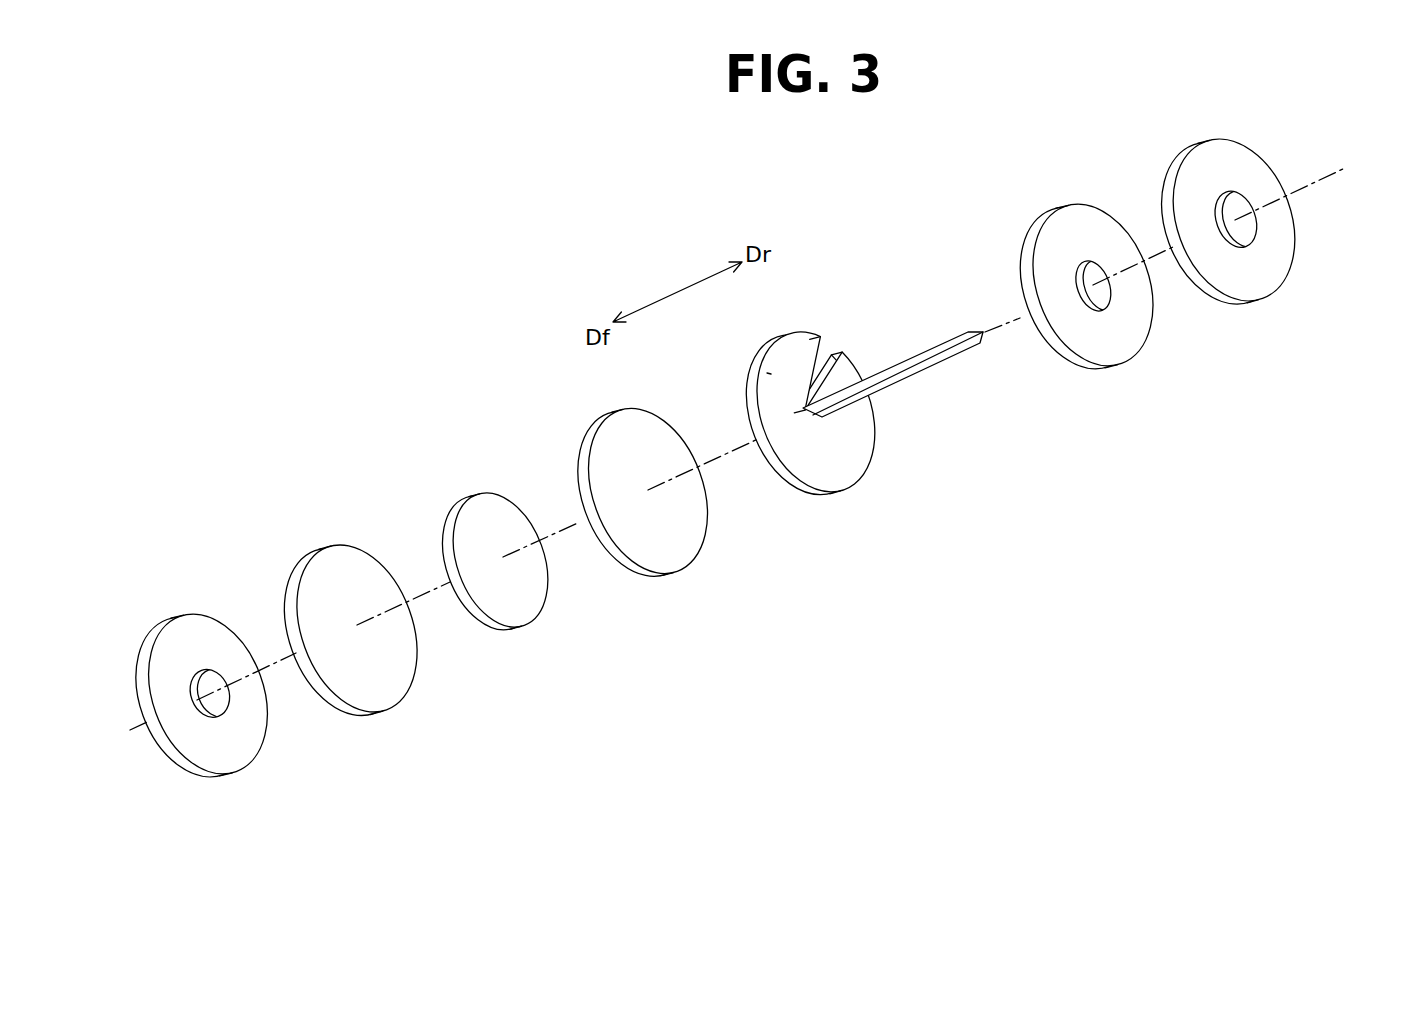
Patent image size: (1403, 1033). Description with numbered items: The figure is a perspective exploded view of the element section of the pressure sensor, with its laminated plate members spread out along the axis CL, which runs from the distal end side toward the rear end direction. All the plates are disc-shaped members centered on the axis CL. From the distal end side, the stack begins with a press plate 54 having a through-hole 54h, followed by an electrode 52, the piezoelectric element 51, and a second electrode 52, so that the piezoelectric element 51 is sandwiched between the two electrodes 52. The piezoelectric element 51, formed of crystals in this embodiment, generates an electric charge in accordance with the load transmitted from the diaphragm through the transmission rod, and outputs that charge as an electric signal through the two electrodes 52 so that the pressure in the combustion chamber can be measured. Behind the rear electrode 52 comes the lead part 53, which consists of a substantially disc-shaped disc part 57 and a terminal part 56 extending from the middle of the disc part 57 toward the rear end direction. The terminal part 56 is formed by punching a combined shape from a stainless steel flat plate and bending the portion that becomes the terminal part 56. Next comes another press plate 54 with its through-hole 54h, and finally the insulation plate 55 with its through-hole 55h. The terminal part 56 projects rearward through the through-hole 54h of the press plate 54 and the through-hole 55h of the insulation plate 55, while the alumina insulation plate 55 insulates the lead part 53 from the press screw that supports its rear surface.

The piezoelectric element 51 is at (530, 612).
The electrode 52 is at (383, 697).
The lead part 53 is at (850, 478).
The press plate 54 is at (235, 768).
The through-hole 54h is at (199, 669).
The insulation plate 55 is at (1263, 289).
The through-hole 55h is at (1227, 192).
The terminal part 56 is at (875, 387).
The disc part 57 is at (771, 374).
The axis CL is at (1308, 186).